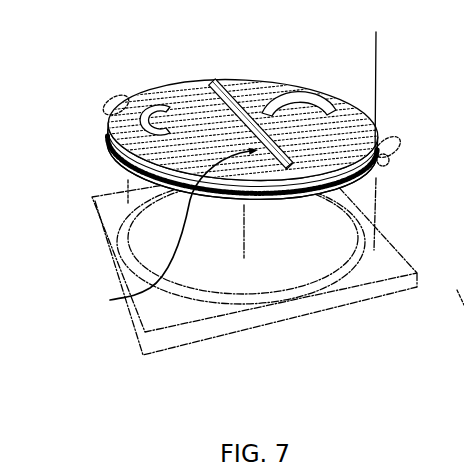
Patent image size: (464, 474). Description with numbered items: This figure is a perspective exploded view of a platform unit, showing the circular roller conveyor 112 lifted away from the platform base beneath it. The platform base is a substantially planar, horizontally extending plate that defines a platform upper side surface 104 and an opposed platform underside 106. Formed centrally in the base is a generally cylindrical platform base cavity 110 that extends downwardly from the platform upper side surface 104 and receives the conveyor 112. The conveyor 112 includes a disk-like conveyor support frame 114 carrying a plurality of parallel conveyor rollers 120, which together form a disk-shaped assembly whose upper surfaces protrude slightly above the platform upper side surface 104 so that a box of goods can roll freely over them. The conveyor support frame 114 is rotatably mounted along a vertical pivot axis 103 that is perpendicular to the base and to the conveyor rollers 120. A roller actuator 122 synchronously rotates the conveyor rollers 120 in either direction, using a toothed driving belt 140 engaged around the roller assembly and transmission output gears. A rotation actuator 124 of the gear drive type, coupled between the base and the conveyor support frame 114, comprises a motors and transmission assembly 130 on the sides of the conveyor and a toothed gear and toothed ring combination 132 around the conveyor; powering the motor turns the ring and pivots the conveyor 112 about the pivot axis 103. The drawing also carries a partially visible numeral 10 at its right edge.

The apparatus 10 is at (360, 290).
The pivot axis 103 is at (244, 258).
The platform upper side surface 104 is at (402, 212).
The platform underside 106 is at (313, 317).
The platform base cavity 110 is at (142, 250).
The conveyor 112 is at (166, 231).
The conveyor support frame 114 is at (376, 32).
The conveyor rollers 120 is at (176, 100).
The roller actuator 122 is at (289, 172).
The rotation actuator 124 is at (92, 106).
The motors and transmission assembly 130 is at (118, 96).
The toothed gear and toothed ring combination 132 is at (350, 178).
The driving belt 140 is at (228, 72).